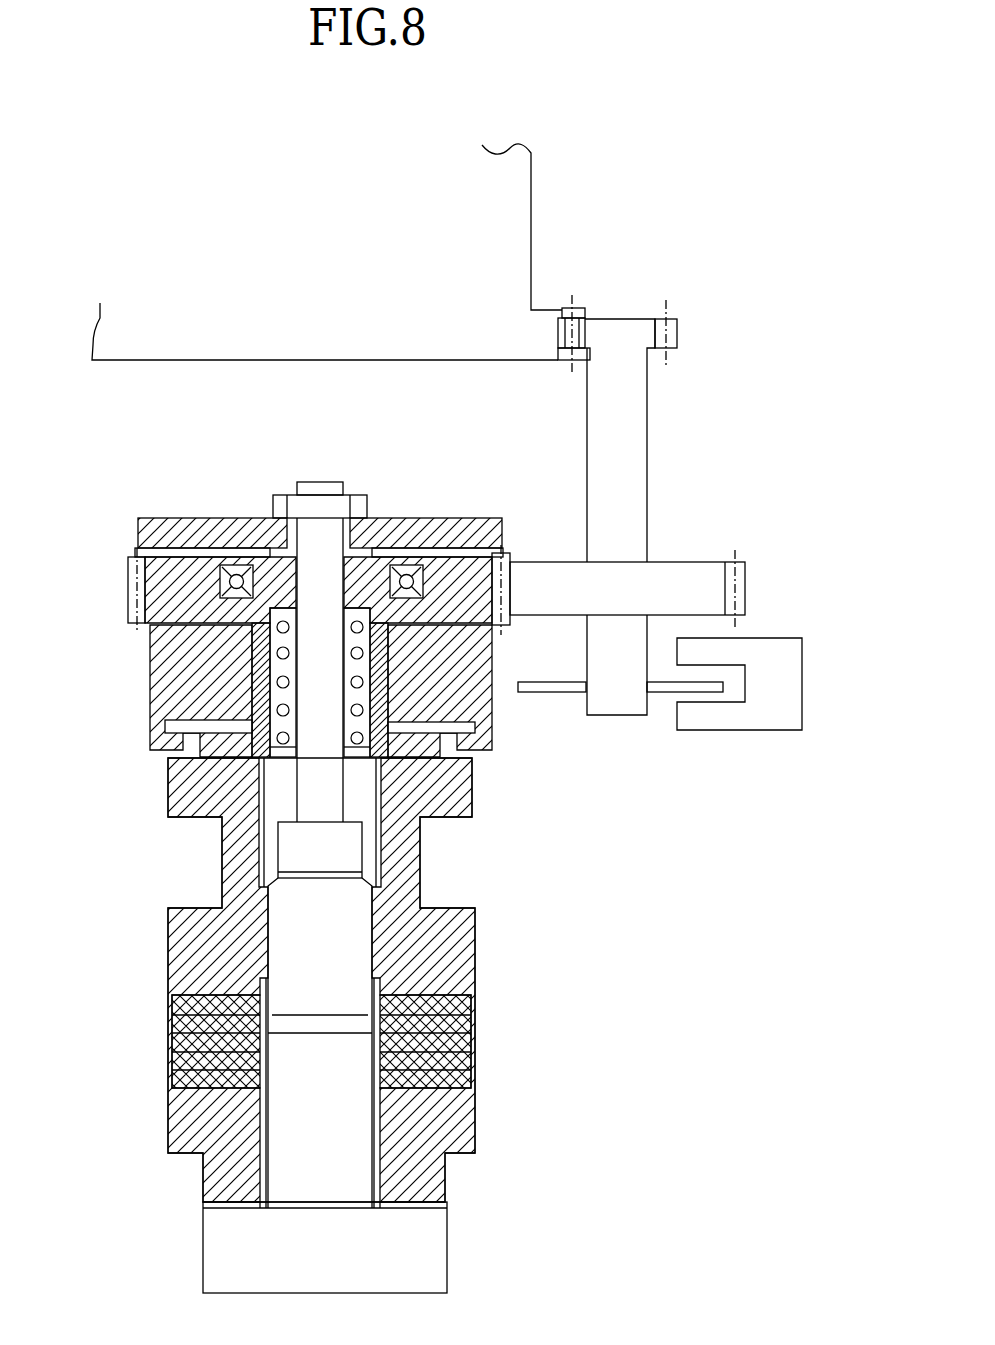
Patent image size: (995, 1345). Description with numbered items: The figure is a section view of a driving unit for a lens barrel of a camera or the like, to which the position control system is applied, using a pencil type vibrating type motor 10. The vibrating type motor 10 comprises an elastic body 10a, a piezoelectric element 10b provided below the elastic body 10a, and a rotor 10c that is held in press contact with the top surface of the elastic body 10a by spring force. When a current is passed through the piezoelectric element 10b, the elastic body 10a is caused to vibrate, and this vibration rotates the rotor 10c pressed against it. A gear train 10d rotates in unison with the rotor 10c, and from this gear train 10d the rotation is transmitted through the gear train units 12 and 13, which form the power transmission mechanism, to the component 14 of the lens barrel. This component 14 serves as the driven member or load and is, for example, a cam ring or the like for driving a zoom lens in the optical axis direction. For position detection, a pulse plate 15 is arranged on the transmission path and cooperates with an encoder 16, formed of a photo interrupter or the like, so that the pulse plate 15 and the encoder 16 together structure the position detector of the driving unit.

The vibrating type motor 10 is at (170, 860).
The elastic body 10a is at (168, 963).
The piezoelectric element 10b is at (492, 992).
The rotor 10c is at (160, 677).
The gear train 10d is at (150, 585).
The gear train unit 12 is at (745, 583).
The gear train unit 13 is at (678, 330).
The component of the lens barrel 14 is at (531, 222).
The pulse plate 15 is at (540, 694).
The encoder 16 is at (737, 731).